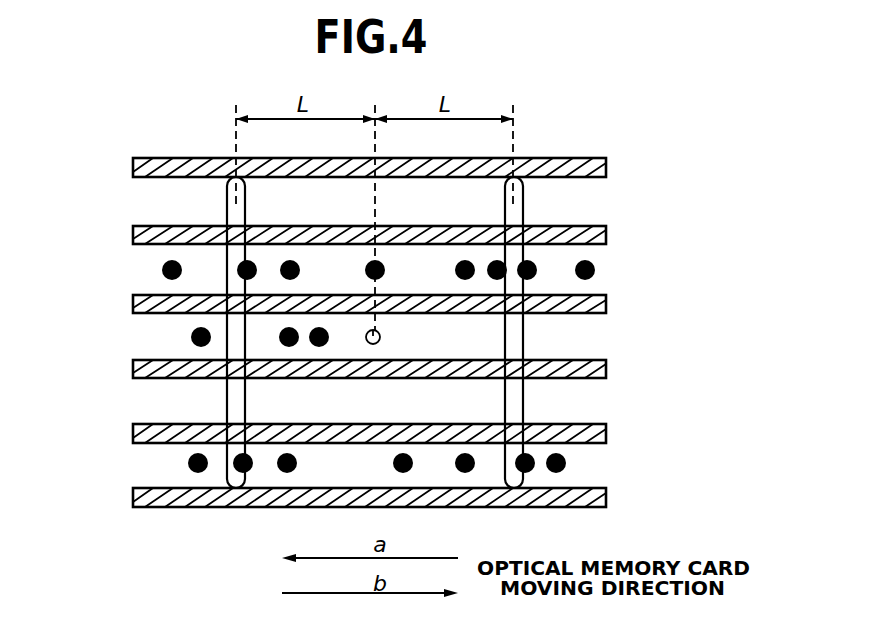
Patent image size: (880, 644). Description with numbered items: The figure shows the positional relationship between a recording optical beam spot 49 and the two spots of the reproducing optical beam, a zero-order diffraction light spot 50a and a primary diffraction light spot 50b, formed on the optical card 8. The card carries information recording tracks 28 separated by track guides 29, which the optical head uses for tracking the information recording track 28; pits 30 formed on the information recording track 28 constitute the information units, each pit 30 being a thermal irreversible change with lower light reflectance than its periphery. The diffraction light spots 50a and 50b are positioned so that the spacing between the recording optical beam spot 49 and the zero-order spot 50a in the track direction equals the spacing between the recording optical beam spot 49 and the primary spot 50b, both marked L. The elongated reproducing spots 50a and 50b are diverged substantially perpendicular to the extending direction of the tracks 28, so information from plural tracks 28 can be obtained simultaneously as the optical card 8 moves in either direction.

The optical card 8 is at (633, 192).
The information recording track 28 is at (147, 397).
The track guide 29 is at (133, 433).
The pit 30 is at (319, 347).
The recording optical beam spot 49 is at (380, 338).
The zero-order diffraction light spot 50a is at (227, 193).
The primary diffraction light spot 50b is at (523, 197).